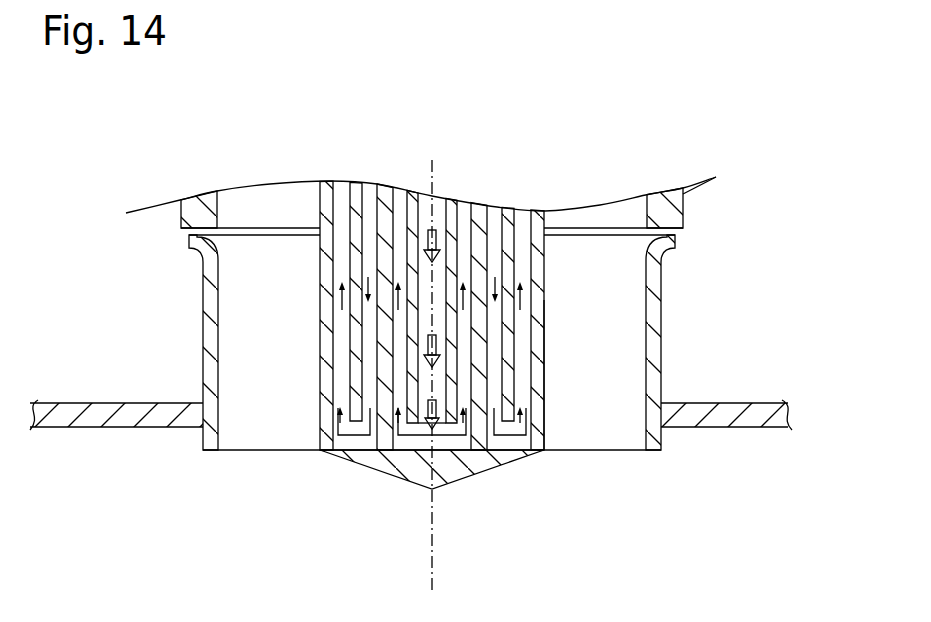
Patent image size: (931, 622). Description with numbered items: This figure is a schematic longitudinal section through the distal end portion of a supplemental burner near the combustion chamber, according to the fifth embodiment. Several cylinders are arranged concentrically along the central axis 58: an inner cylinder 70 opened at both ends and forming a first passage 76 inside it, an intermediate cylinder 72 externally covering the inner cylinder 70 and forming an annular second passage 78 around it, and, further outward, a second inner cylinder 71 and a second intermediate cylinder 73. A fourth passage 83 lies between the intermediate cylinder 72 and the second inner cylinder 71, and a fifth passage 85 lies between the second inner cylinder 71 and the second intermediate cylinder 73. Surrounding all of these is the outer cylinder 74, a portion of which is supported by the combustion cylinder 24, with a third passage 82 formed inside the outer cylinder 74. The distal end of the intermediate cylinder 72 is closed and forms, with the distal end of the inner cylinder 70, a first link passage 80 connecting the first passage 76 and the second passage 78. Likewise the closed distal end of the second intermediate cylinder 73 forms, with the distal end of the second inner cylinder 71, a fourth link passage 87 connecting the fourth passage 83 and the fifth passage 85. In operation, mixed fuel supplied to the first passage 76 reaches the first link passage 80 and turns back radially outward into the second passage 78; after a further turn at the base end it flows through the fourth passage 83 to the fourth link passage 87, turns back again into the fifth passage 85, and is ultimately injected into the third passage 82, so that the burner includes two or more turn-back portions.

The fifth passage 85 is at (343, 185).
The second passage 78 is at (377, 184).
The inner cylinder 70 is at (412, 190).
The first passage 76 is at (458, 197).
The fourth passage 83 is at (497, 207).
The third passage 82 is at (237, 362).
The outer cylinder 74 is at (653, 350).
The fourth link passage 87 is at (352, 449).
The first link passage 80 is at (413, 442).
The second intermediate cylinder 73 is at (542, 352).
The second inner cylinder 71 is at (541, 348).
The intermediate cylinder 72 is at (470, 425).
The combustion cylinder 24 is at (757, 423).
The central axis 58 is at (431, 545).